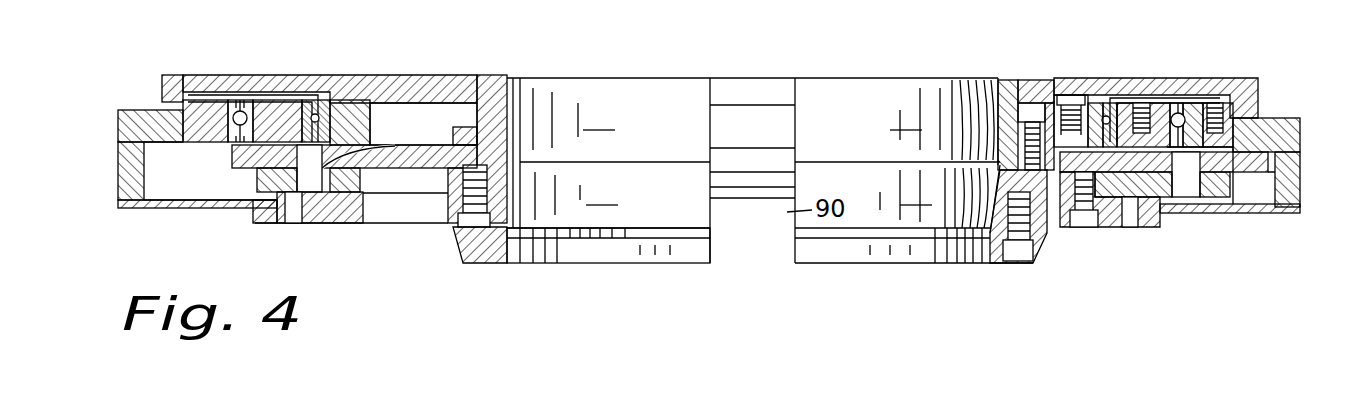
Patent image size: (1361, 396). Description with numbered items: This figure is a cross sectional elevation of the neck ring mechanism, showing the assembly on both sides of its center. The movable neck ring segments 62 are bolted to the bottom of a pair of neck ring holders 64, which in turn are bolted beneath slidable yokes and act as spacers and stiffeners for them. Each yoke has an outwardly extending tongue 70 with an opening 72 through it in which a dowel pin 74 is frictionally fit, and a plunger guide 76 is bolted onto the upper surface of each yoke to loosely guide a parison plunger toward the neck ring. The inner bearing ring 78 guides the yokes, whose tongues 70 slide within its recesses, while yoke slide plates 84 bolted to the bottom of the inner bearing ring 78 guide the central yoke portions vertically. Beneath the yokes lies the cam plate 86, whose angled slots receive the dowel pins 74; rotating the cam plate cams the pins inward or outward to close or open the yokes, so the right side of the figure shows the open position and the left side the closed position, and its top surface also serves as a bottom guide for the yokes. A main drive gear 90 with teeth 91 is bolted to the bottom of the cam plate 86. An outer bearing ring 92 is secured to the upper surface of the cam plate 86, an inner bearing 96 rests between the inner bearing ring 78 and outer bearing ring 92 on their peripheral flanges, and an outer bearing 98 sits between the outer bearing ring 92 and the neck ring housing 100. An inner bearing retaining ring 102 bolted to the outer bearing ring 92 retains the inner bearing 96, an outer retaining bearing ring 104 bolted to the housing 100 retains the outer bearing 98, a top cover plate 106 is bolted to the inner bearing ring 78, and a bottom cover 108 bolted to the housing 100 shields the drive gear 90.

The neck ring segment 62 is at (499, 250).
The neck ring holder 64 is at (457, 200).
The tongue 70 is at (426, 154).
The opening 72 is at (382, 156).
The dowel pin 74 is at (313, 182).
The plunger guide 76 is at (488, 88).
The inner bearing ring 78 is at (402, 112).
The yoke slide plate 84 is at (785, 178).
The cam plate 86 is at (258, 181).
The main drive gear 90 is at (350, 214).
The teeth 91 is at (292, 220).
The outer bearing ring 92 is at (272, 108).
The inner bearing 96 is at (328, 112).
The outer bearing 98 is at (232, 121).
The neck ring housing 100 is at (117, 128).
The inner bearing retaining ring 102 is at (289, 95).
The outer retaining bearing ring 104 is at (211, 94).
The top cover plate 106 is at (160, 88).
The bottom cover 108 is at (190, 208).